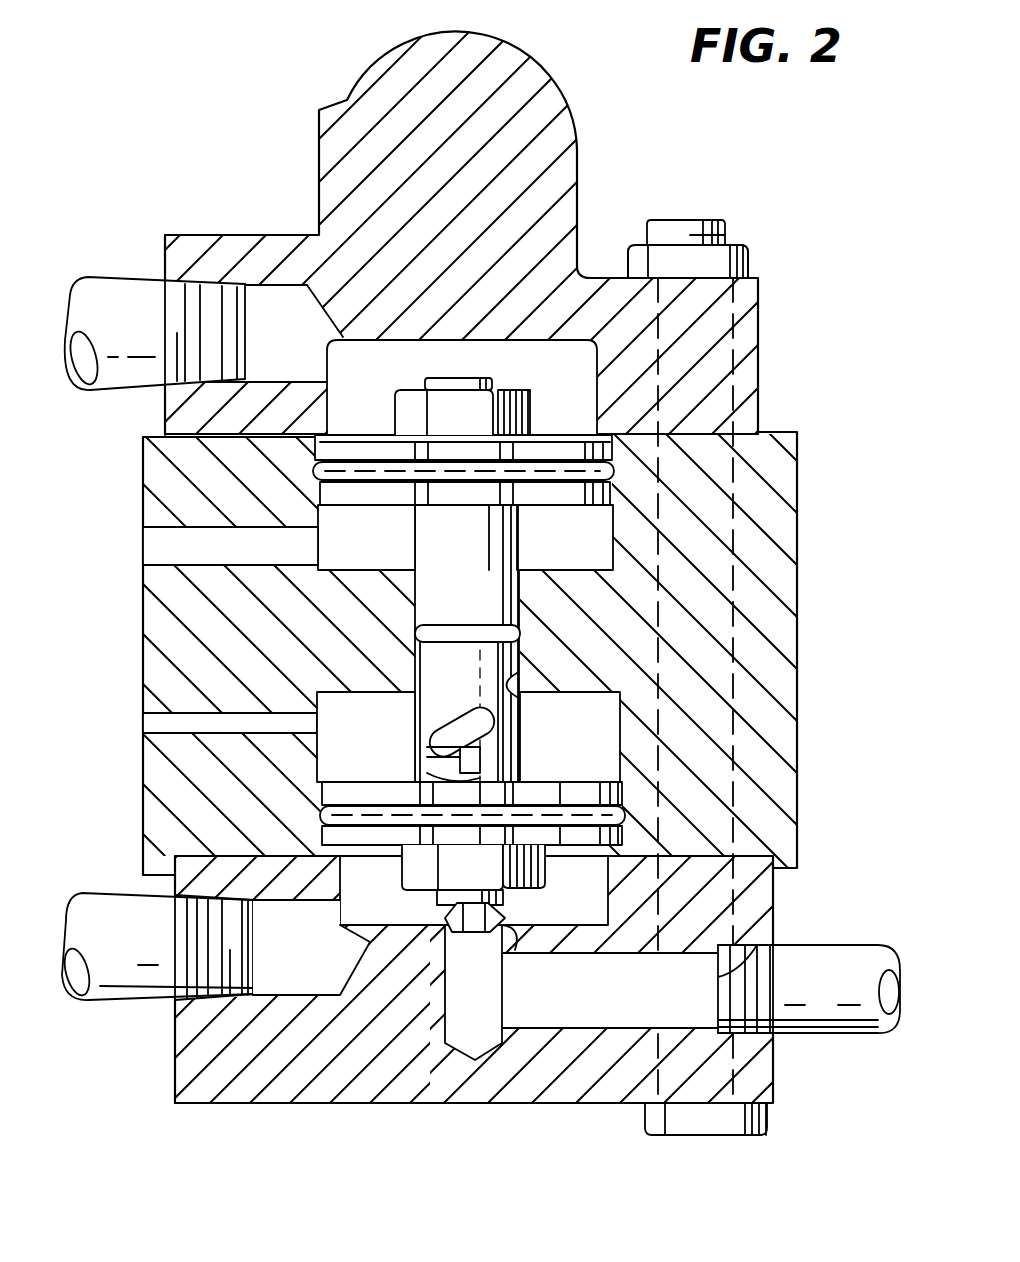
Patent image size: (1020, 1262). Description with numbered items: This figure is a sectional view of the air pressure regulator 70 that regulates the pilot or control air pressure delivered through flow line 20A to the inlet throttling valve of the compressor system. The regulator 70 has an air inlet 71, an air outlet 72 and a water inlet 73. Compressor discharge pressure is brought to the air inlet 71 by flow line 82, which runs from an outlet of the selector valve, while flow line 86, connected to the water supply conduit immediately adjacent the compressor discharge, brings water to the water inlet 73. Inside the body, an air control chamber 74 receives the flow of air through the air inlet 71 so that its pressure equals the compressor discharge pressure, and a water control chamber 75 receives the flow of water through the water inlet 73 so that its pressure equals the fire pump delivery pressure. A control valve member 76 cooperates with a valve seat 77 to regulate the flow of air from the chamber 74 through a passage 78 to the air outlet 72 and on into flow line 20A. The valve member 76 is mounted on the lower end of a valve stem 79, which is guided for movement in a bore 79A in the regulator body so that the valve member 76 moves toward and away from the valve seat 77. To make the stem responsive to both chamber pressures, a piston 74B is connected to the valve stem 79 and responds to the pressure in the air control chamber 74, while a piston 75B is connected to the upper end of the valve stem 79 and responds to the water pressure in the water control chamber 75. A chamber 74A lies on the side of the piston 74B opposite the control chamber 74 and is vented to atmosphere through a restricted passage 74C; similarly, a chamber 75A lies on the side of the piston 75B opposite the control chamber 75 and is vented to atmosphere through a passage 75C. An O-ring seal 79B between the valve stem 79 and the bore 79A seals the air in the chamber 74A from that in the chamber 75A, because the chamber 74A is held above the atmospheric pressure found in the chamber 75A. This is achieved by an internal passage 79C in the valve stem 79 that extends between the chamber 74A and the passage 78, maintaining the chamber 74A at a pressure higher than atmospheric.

The air pressure regulator 70 is at (553, 138).
The flow line 86 is at (130, 285).
The water inlet 73 is at (230, 302).
The water control chamber 75 is at (372, 383).
The piston 75B is at (565, 490).
The chamber 75A is at (382, 552).
The valve stem 79 is at (497, 542).
The passage 75C is at (147, 548).
The O-ring seal 79B is at (492, 632).
The chamber 74A is at (383, 738).
The bore 79A is at (520, 673).
The internal passage 79C is at (470, 753).
The piston 74B is at (593, 830).
The restricted passage 74C is at (147, 725).
The air control chamber 74 is at (388, 911).
The control valve member 76 is at (505, 910).
The valve seat 77 is at (513, 940).
The air outlet 72 is at (717, 980).
The flow line 20A is at (855, 968).
The air inlet 71 is at (223, 995).
The flow line 82 is at (132, 982).
The passage 78 is at (473, 1035).